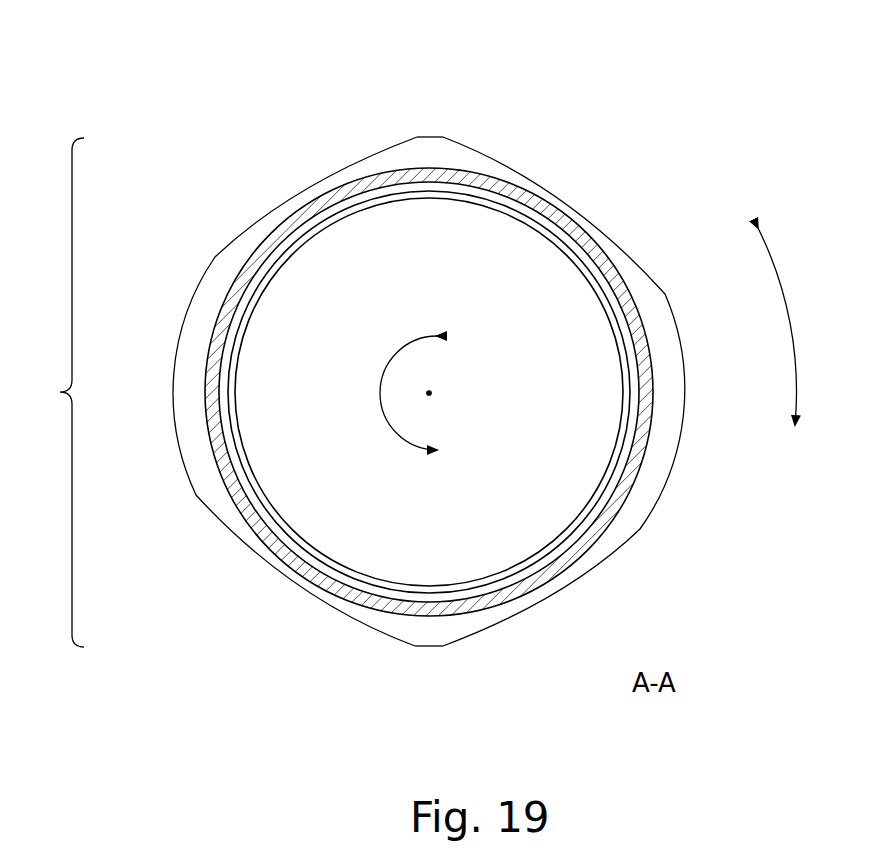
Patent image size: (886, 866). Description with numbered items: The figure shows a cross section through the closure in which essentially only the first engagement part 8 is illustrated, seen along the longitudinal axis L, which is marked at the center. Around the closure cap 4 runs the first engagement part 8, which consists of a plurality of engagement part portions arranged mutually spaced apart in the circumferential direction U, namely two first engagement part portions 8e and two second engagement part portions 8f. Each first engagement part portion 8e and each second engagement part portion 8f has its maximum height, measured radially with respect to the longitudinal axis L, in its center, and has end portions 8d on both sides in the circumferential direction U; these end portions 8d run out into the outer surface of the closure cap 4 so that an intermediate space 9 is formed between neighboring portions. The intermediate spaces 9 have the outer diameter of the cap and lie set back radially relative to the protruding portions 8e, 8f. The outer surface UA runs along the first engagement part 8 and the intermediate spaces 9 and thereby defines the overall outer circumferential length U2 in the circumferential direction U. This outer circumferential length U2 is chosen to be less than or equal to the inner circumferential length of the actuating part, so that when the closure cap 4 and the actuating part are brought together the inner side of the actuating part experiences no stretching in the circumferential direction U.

The closure cap 4 is at (438, 273).
The first engagement part 8 is at (431, 153).
The end portions 8d is at (401, 146).
The first engagement part portion 8e is at (48, 392).
The second engagement part portion 8f is at (502, 50).
The intermediate spaces 9 is at (288, 190).
The circumferential direction U is at (372, 382).
The outer surface UA is at (733, 493).
The overall outer circumferential length U2 is at (794, 326).
The longitudinal axis L is at (433, 393).